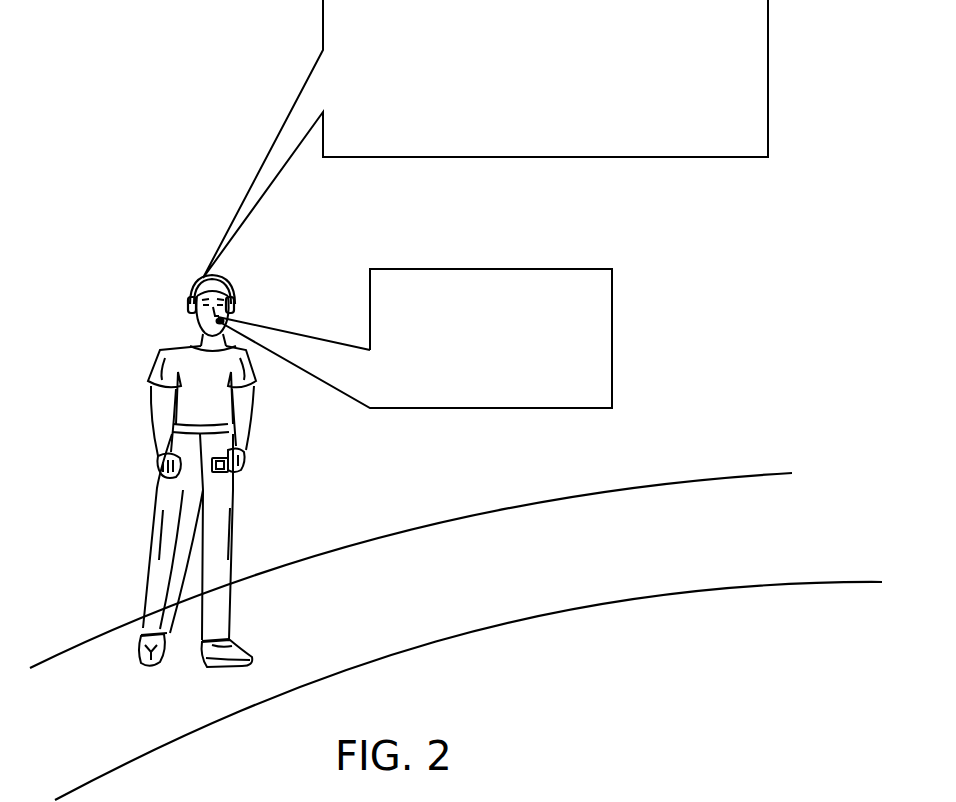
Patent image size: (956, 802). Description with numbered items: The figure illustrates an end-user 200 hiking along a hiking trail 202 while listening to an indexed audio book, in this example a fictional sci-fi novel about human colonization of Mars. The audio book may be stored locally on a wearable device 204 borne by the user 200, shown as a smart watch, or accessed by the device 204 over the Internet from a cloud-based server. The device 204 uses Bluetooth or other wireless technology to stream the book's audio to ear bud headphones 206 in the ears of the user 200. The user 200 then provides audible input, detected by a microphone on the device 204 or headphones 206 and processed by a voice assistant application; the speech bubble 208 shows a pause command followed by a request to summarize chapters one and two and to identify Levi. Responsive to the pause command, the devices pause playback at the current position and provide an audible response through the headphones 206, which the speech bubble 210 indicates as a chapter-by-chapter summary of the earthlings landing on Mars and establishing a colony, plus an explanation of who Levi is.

The end-user 200 is at (150, 360).
The hiking trail 202 is at (750, 543).
The wearable device 204 is at (229, 473).
The ear bud headphones 206 is at (190, 314).
The speech bubble 208 is at (493, 408).
The speech bubble 210 is at (550, 157).